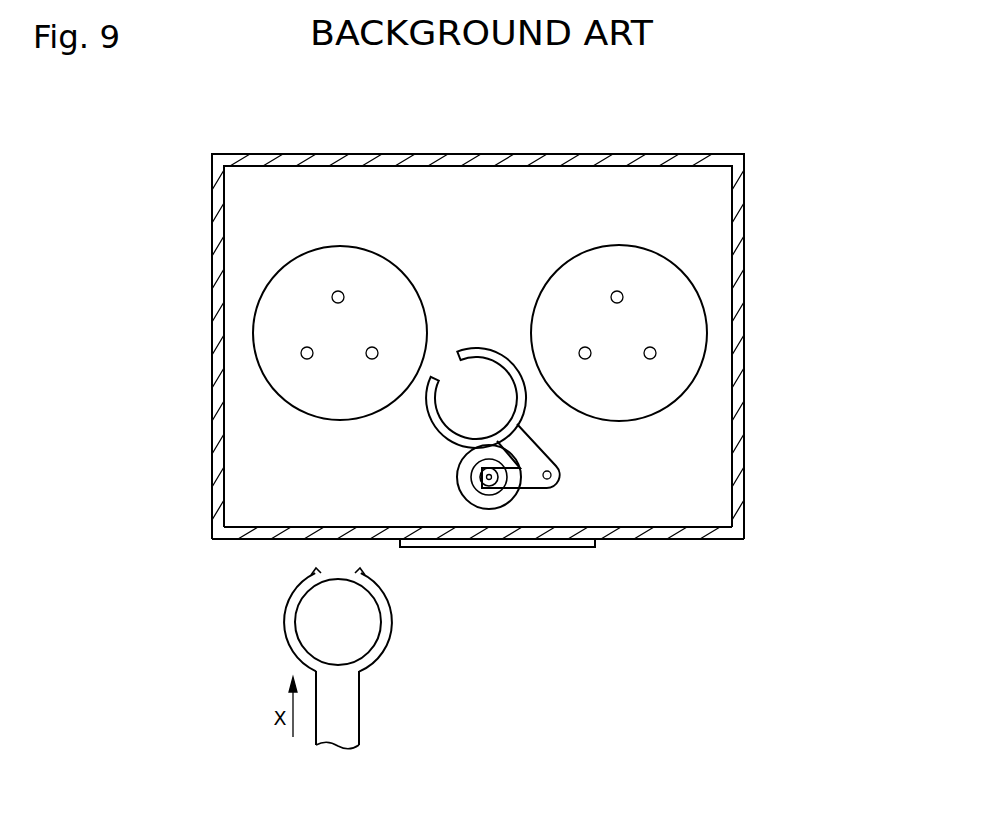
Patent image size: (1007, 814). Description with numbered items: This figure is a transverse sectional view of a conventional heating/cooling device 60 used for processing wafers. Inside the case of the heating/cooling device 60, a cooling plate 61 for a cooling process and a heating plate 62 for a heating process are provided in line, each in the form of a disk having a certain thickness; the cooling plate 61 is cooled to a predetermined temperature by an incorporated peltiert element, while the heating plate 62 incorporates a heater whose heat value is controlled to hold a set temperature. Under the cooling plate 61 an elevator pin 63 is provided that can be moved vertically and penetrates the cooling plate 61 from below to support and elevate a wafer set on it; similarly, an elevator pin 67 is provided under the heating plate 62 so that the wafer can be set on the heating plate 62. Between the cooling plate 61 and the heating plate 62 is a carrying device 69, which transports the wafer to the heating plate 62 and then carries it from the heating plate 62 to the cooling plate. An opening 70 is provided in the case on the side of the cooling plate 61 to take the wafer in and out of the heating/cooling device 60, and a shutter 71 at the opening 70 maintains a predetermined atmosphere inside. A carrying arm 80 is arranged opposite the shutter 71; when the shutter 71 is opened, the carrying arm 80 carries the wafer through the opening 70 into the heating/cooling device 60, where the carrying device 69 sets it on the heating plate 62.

The heating/cooling device 60 is at (505, 136).
The cooling plate 61 is at (308, 269).
The heating plate 62 is at (650, 269).
The elevator pin 63 is at (332, 297).
The elevator pin 67 is at (623, 296).
The carrying device 69 is at (488, 505).
The opening 70 is at (265, 541).
The shutter 71 is at (412, 548).
The carrying arm 80 is at (347, 707).